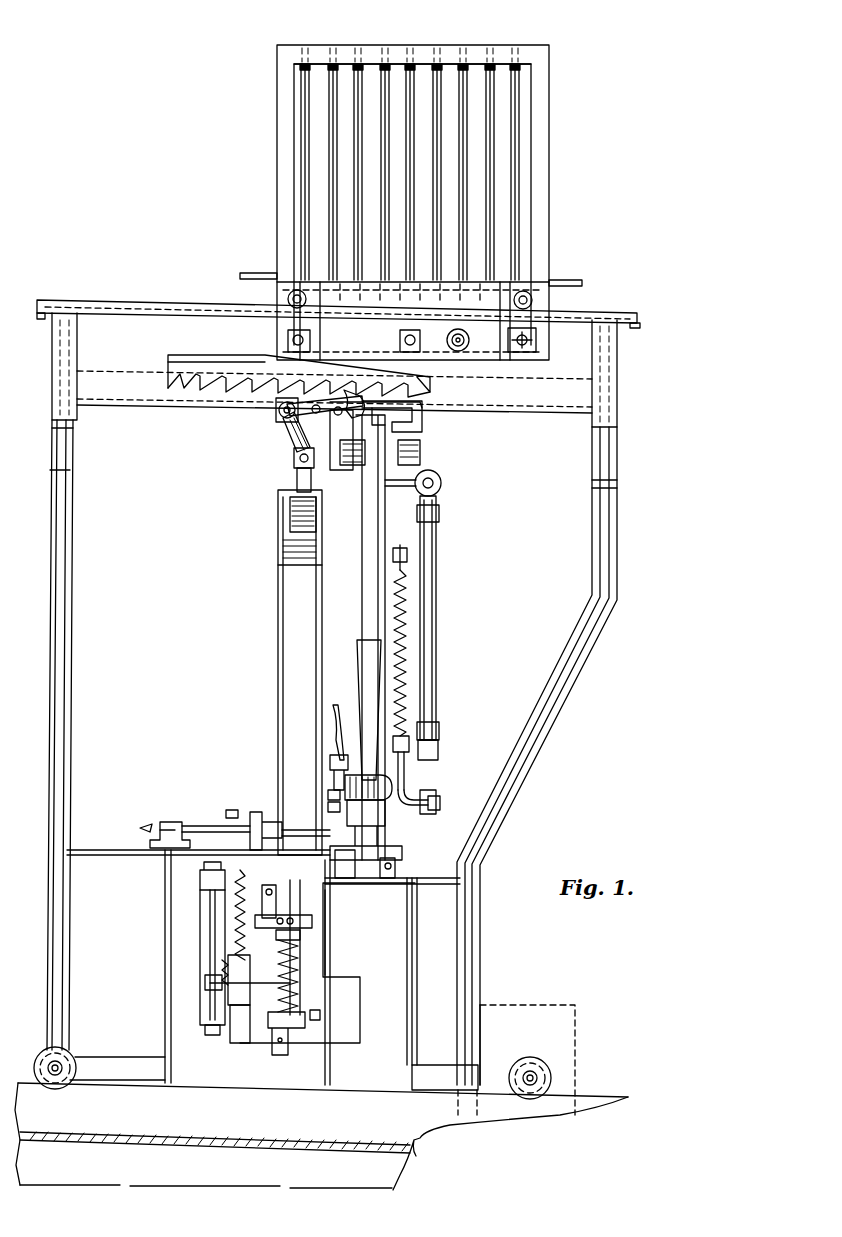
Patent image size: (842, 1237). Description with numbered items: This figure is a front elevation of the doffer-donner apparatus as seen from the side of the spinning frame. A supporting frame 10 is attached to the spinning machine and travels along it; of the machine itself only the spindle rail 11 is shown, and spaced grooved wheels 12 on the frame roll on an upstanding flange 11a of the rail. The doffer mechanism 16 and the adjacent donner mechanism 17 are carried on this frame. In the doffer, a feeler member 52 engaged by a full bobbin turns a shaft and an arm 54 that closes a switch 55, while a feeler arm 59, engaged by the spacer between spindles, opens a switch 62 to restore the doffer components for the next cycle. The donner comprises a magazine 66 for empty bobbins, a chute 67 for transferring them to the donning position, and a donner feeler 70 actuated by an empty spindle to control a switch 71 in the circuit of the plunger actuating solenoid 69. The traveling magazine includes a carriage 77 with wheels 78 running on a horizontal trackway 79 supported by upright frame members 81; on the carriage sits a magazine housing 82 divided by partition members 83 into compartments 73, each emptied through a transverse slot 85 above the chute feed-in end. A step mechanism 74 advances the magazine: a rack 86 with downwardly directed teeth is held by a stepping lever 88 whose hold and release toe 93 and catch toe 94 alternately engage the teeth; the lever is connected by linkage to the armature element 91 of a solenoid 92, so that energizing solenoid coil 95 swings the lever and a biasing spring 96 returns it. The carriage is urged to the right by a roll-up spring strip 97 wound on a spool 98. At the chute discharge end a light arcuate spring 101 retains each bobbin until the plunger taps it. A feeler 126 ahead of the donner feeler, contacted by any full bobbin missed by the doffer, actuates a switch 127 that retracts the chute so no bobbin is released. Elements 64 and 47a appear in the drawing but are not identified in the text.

The supporting frame 10 is at (97, 834).
The spindle rail 11 is at (321, 1109).
The upstanding flange 11a is at (105, 1080).
The grooved wheels 12 is at (60, 1052).
The doffer mechanism 16 is at (239, 963).
The donner mechanism 17 is at (417, 806).
The bracket 47a is at (290, 1040).
The feeler member 52 is at (262, 825).
The arm 54 is at (200, 826).
The switch 55 is at (160, 822).
The feeler arm 59 is at (296, 998).
The switch 62 is at (222, 996).
The cylinder 64 is at (272, 672).
The magazine 66 is at (402, 210).
The chute 67 is at (205, 392).
The plunger actuating solenoid 69 is at (287, 443).
The donner feeler 70 is at (362, 870).
The switch 71 is at (332, 737).
The compartments 73 is at (355, 66).
The step mechanism 74 is at (254, 440).
The carriage 77 is at (275, 279).
The wheels 78 is at (288, 297).
The trackway 79 is at (122, 290).
The upright frame members 81 is at (607, 373).
The magazine housing 82 is at (278, 160).
The partition members 83 is at (366, 164).
The transverse slot 85 is at (410, 432).
The rack 86 is at (212, 362).
The stepping lever 88 is at (275, 401).
The armature element 91 is at (296, 485).
The solenoid 92 is at (289, 510).
The hold and release toe 93 is at (292, 380).
The catch toe 94 is at (455, 418).
The solenoid coil 95 is at (290, 540).
The biasing spring 96 is at (432, 494).
The strip 97 is at (525, 350).
The spool 98 is at (460, 352).
The arcuate spring 101 is at (388, 826).
The feeler 126 is at (328, 793).
The switch 127 is at (328, 806).